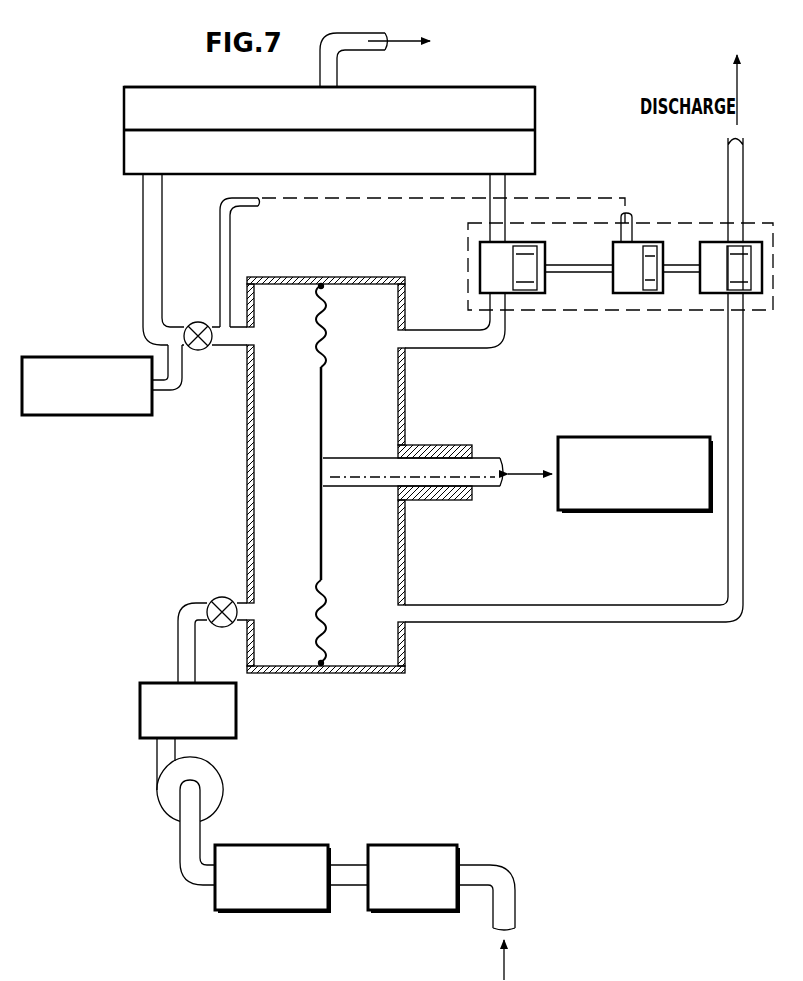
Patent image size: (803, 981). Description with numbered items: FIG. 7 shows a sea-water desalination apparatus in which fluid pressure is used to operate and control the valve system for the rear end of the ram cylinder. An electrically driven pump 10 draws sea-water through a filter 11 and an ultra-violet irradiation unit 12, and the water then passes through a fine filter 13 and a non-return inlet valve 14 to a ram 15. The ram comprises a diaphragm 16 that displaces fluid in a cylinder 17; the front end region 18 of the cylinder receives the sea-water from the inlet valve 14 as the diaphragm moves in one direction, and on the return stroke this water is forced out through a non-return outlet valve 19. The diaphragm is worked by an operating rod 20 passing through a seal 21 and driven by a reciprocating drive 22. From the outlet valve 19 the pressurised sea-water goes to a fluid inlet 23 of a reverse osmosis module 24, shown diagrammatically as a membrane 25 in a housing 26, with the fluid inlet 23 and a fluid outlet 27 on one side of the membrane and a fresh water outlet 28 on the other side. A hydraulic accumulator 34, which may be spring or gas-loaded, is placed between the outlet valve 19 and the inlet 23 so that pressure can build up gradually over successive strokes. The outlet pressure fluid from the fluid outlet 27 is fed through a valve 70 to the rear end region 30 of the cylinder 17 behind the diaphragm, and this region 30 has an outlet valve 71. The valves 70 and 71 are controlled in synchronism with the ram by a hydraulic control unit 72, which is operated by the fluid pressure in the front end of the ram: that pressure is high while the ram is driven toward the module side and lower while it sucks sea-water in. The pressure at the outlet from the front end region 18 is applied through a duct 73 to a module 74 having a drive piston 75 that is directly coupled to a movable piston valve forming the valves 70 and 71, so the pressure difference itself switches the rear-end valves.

The pump 10 is at (214, 779).
The filter 11 is at (436, 846).
The ultra-violet irradiation unit 12 is at (302, 850).
The fine filter 13 is at (227, 712).
The non-return inlet valve 14 is at (220, 596).
The ram 15 is at (237, 428).
The diaphragm 16 is at (321, 440).
The cylinder 17 is at (321, 284).
The front end region of the cylinder 18 is at (254, 387).
The non-return outlet valve 19 is at (198, 322).
The operating rod 20 is at (485, 462).
The seal 21 is at (450, 500).
The reciprocating drive 22 is at (656, 497).
The fluid inlet 23 is at (151, 180).
The reverse osmosis module 24 is at (547, 148).
The membrane 25 is at (512, 130).
The housing 26 is at (191, 98).
The fluid outlet 27 is at (505, 180).
The fresh water outlet 28 is at (320, 73).
The rear end region of the cylinder 30 is at (385, 398).
The hydraulic accumulator 34 is at (106, 357).
The valve 70 is at (480, 256).
The outlet valve 71 is at (752, 293).
The hydraulic control unit 72 is at (664, 230).
The duct 73 is at (220, 270).
The module 74 is at (663, 293).
The drive piston 75 is at (648, 284).